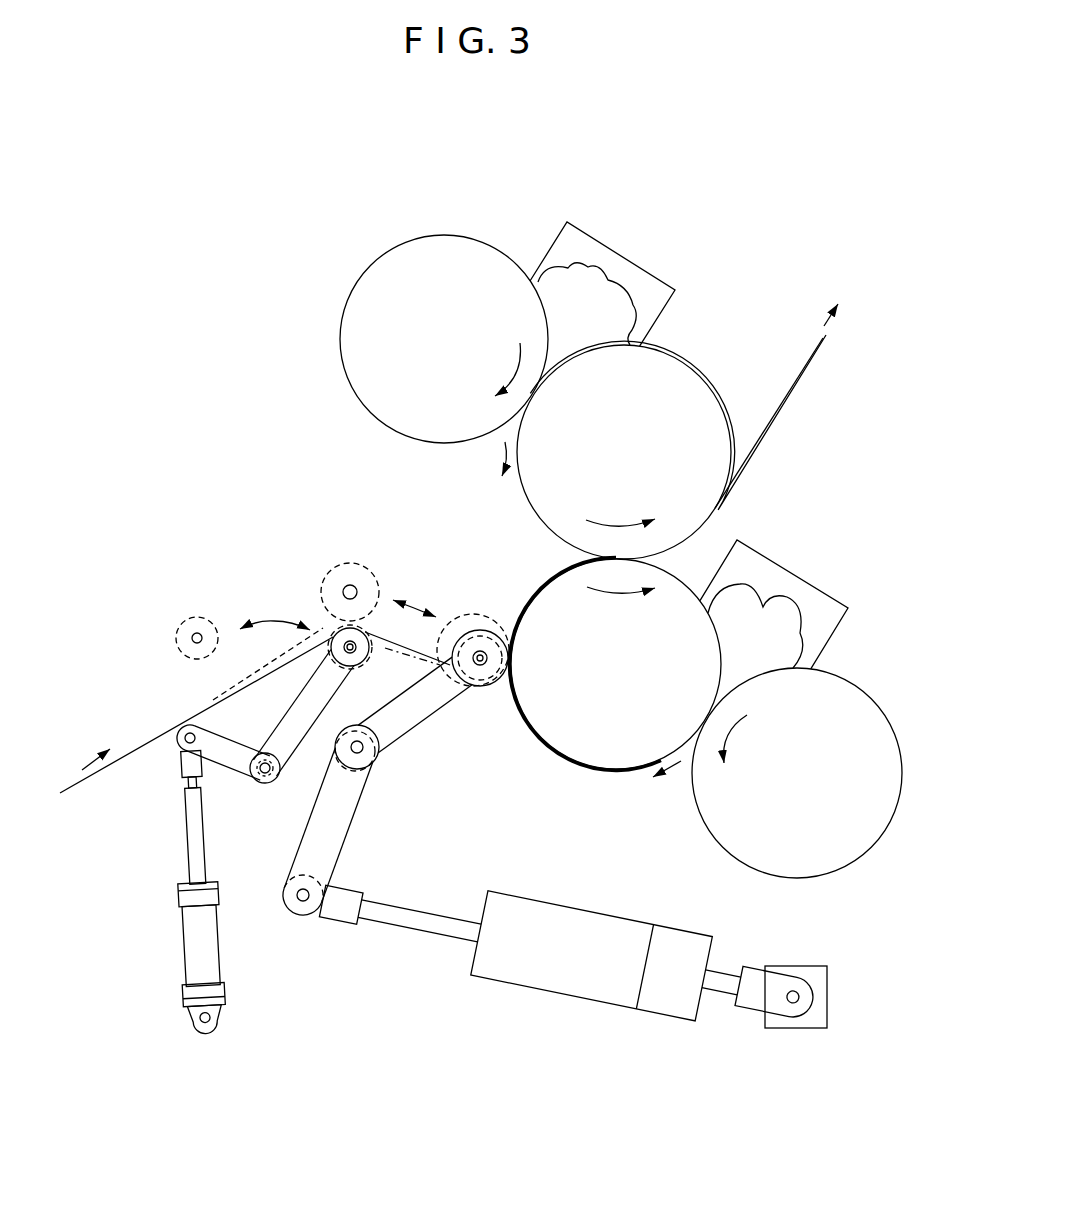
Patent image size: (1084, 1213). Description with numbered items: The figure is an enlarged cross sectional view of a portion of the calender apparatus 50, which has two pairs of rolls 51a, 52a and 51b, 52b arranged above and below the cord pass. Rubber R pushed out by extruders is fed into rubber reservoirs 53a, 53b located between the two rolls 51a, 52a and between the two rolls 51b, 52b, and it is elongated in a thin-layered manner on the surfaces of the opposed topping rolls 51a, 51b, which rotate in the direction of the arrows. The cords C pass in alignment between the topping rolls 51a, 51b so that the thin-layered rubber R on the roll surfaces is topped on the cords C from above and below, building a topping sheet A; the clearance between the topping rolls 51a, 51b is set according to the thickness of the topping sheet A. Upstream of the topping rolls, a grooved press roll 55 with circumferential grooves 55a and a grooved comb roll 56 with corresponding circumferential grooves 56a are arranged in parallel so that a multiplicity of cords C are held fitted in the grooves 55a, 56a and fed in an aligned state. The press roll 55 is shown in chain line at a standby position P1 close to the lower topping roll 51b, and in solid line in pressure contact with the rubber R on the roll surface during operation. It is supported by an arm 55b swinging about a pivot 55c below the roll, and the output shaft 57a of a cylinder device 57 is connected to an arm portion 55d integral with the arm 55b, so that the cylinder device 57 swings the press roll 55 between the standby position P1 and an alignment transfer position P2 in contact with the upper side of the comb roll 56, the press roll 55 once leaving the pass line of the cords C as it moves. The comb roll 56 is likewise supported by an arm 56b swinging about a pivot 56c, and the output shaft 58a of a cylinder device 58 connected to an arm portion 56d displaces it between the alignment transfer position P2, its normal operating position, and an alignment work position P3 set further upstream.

The calender apparatus 50 is at (266, 233).
The upper topping roll 51a is at (673, 387).
The lower topping roll 51b is at (632, 733).
The roll 52a is at (450, 255).
The roll 52b is at (833, 850).
The rubber reservoir 53a is at (621, 277).
The rubber reservoir 53b is at (798, 584).
The grooved press roll 55 is at (336, 566).
The circumferential grooves 55a is at (476, 700).
The arm 55b is at (417, 720).
The pivot 55c is at (290, 843).
The arm portion 55d is at (345, 823).
The grooved comb roll 56 is at (372, 661).
The circumferential grooves 56a is at (333, 628).
The arm 56b is at (300, 712).
The pivot 56c is at (267, 780).
The arm portion 56d is at (221, 764).
The cylinder device 57 is at (573, 977).
The output shaft 57a is at (448, 928).
The cylinder device 58 is at (190, 938).
The output shaft 58a is at (188, 843).
The topping sheet A is at (773, 413).
The cords C is at (99, 770).
The rubber R is at (584, 293).
The standby position P1 is at (470, 613).
The alignment transfer position P2 is at (362, 555).
The alignment work position P3 is at (197, 588).